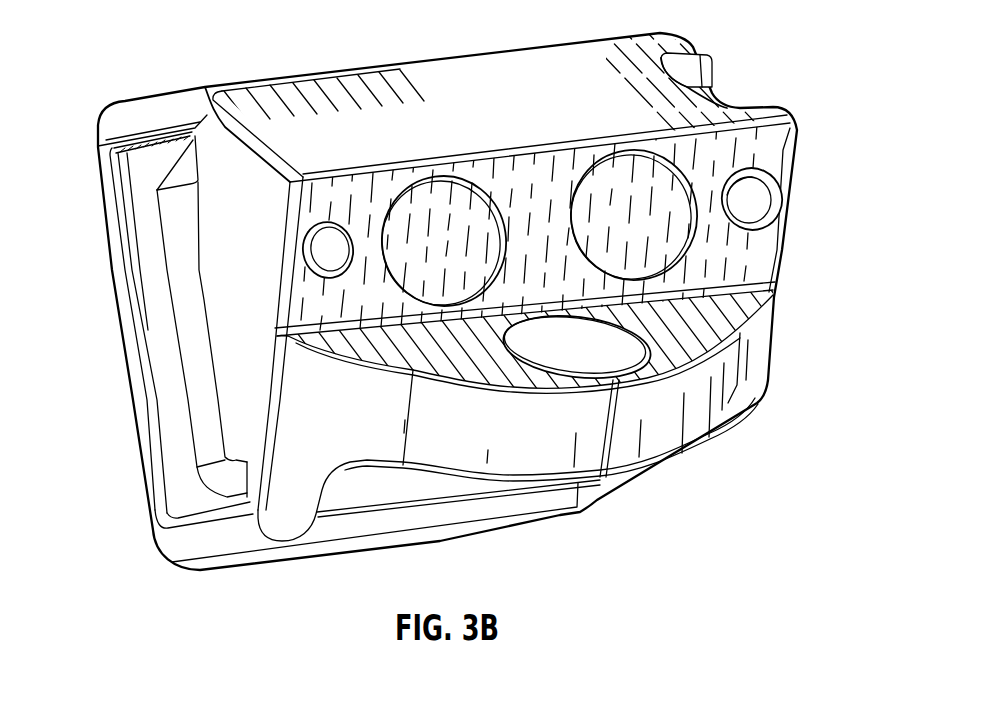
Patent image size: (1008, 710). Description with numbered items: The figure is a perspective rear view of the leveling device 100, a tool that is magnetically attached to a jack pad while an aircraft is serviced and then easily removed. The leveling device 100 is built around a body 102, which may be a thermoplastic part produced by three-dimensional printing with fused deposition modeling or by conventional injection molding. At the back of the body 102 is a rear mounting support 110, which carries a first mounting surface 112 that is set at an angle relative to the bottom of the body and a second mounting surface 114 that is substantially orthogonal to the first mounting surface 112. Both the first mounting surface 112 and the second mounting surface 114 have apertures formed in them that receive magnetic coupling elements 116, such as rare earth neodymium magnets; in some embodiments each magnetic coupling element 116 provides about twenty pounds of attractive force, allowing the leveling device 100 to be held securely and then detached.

The leveling device 100 is at (137, 168).
The body 102 is at (193, 248).
The rear mounting support 110 is at (808, 251).
The first mounting surface 112 is at (493, 342).
The second mounting surface 114 is at (318, 289).
The magnetic coupling elements 116 is at (440, 200).